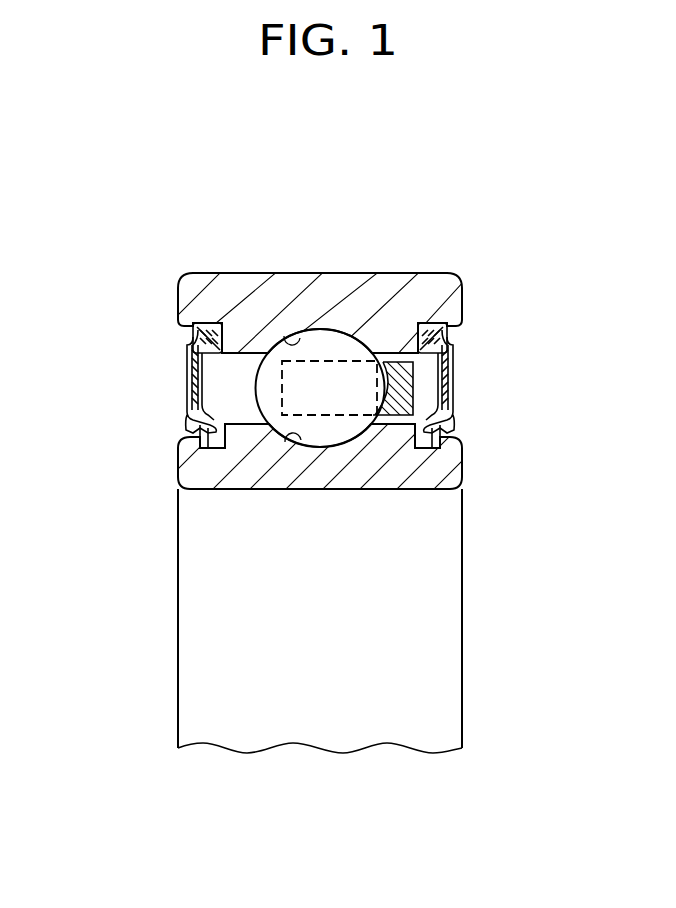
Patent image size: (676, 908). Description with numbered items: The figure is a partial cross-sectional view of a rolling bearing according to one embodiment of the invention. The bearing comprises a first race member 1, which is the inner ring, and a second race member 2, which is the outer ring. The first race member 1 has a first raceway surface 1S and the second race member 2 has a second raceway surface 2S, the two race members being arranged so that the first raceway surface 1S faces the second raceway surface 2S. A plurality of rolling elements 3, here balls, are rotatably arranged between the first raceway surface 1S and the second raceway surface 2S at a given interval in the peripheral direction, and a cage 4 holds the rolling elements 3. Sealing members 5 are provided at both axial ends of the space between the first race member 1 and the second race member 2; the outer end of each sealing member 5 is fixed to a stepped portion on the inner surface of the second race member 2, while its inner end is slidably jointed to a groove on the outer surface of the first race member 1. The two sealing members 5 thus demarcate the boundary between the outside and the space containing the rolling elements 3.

The first race member 1 is at (410, 478).
The first raceway surface 1S is at (297, 440).
The second race member 2 is at (215, 292).
The second raceway surface 2S is at (293, 337).
The rolling element 3 is at (337, 350).
The cage 4 is at (398, 367).
The sealing member 5 is at (174, 430).